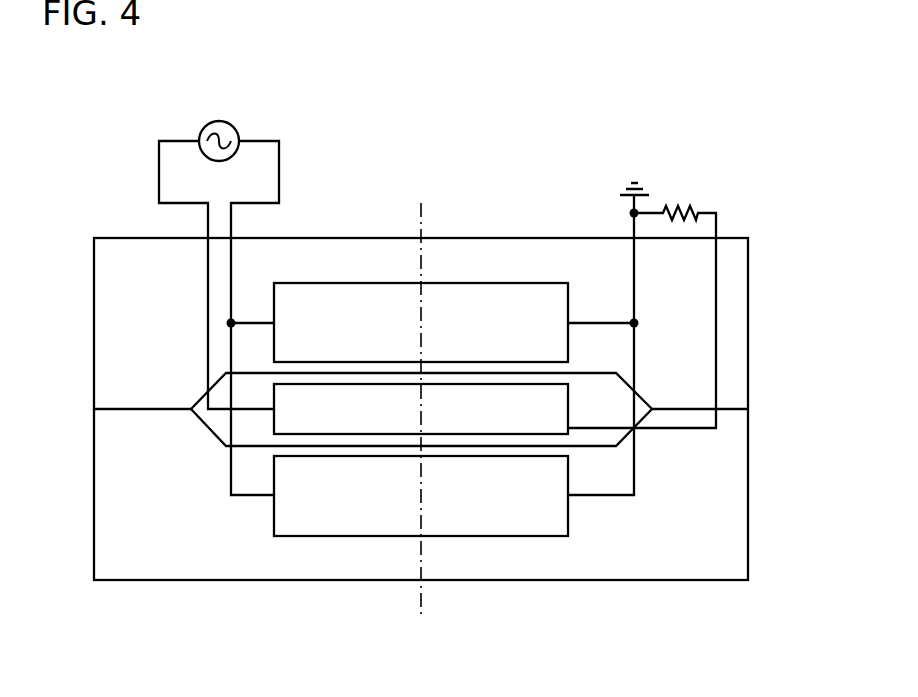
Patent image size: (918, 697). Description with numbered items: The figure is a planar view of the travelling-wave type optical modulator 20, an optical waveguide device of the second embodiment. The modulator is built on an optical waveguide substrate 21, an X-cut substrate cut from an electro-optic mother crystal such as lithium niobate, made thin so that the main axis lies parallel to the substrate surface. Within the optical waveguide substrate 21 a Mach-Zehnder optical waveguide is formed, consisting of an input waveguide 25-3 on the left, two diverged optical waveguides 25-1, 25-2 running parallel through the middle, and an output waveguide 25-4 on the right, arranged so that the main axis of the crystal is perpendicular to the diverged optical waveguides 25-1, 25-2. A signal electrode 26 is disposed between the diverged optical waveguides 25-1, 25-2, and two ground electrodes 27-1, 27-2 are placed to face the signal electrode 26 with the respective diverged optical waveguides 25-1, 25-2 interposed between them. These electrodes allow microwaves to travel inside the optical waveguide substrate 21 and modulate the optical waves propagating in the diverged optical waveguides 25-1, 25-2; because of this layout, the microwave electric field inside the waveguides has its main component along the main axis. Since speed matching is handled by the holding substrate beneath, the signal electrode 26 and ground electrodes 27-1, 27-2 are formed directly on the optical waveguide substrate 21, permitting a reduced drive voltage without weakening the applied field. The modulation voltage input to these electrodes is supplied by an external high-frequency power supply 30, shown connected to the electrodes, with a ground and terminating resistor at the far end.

The travelling-wave type optical modulator 20 is at (496, 156).
The optical waveguide substrate 21 is at (748, 322).
The external high-frequency power supply 30 is at (217, 120).
The ground electrode 27-1 is at (350, 300).
The ground electrode 27-2 is at (513, 518).
The signal electrode 26 is at (288, 420).
The diverged optical waveguide 25-1 is at (597, 373).
The diverged optical waveguide 25-2 is at (597, 446).
The input waveguide 25-3 is at (128, 407).
The output waveguide 25-4 is at (668, 407).